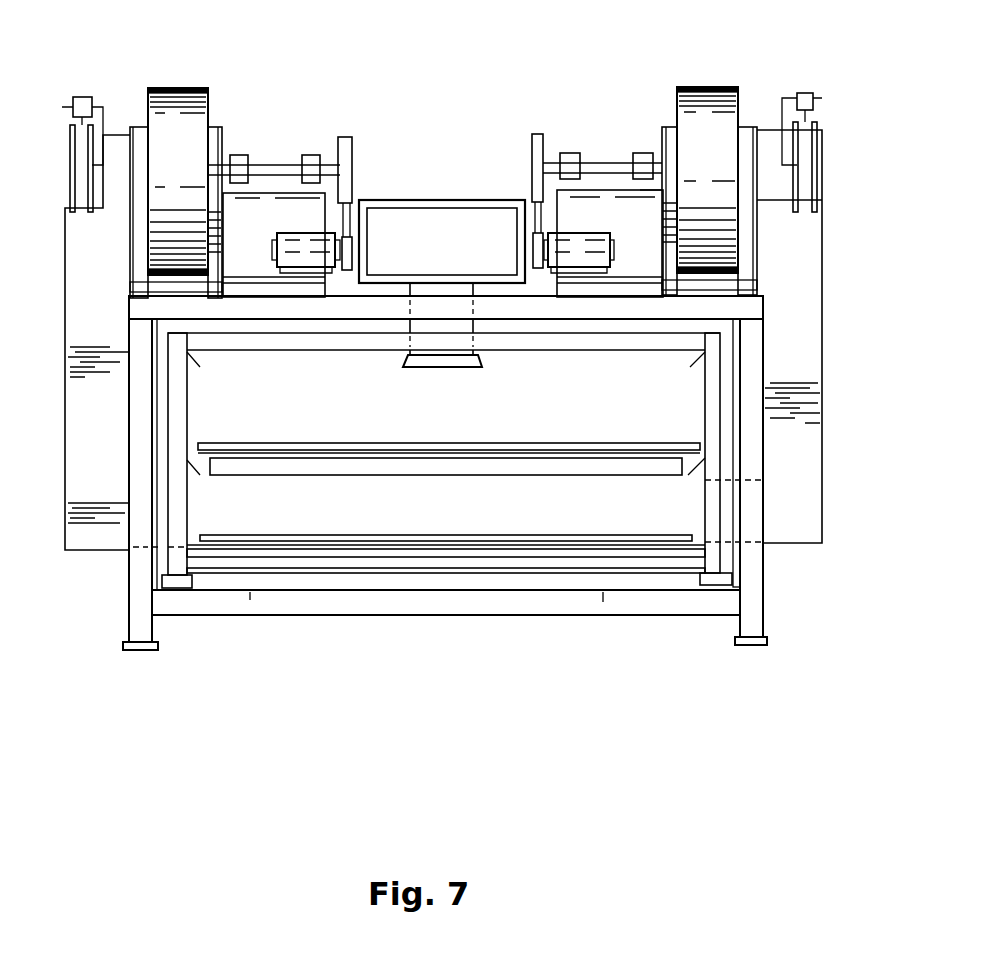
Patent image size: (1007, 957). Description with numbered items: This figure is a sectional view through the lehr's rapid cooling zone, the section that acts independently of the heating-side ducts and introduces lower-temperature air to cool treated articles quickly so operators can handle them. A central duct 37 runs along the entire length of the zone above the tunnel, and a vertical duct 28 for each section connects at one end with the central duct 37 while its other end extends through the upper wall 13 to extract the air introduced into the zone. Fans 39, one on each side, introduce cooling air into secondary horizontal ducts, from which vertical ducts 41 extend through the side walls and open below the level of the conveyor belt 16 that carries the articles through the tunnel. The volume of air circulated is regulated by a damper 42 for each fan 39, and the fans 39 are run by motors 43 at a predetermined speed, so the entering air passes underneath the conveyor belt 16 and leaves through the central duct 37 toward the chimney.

The upper wall 13 is at (727, 336).
The conveyor belt 16 is at (495, 537).
The vertical duct 28 is at (428, 332).
The central duct 37 is at (441, 215).
The fan 39 is at (185, 88).
The vertical duct 41 is at (800, 480).
The damper 42 is at (797, 163).
The motor 43 is at (282, 233).